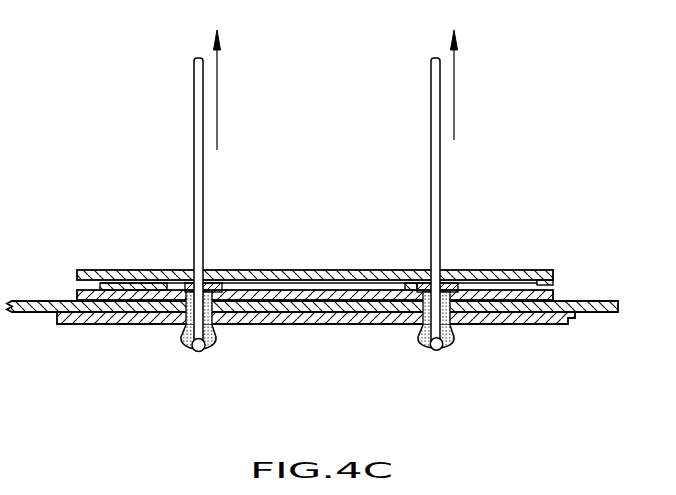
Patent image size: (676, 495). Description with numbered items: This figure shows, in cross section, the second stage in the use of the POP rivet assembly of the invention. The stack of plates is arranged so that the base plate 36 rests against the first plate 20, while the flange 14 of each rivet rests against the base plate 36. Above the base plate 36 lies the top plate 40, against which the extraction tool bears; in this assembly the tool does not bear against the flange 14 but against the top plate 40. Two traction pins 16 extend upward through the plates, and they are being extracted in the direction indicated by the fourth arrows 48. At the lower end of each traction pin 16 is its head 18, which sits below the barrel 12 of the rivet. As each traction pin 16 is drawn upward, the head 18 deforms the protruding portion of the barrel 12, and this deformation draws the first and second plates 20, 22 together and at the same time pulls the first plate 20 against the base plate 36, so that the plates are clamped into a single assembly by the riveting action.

The barrel 12 is at (455, 333).
The flange 14 is at (222, 270).
The traction pin 16 is at (194, 136).
The head 18 is at (203, 352).
The first plate 20 is at (603, 312).
The second plate 22 is at (542, 318).
The base plate 36 is at (548, 298).
The top plate 40 is at (543, 272).
The fourth arrows 48 is at (218, 97).